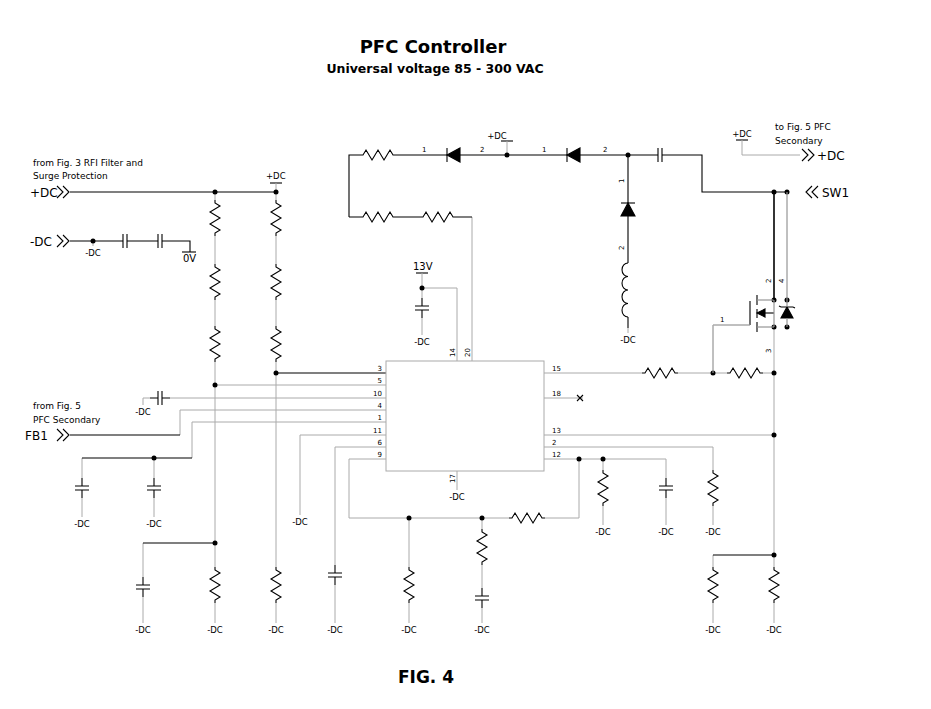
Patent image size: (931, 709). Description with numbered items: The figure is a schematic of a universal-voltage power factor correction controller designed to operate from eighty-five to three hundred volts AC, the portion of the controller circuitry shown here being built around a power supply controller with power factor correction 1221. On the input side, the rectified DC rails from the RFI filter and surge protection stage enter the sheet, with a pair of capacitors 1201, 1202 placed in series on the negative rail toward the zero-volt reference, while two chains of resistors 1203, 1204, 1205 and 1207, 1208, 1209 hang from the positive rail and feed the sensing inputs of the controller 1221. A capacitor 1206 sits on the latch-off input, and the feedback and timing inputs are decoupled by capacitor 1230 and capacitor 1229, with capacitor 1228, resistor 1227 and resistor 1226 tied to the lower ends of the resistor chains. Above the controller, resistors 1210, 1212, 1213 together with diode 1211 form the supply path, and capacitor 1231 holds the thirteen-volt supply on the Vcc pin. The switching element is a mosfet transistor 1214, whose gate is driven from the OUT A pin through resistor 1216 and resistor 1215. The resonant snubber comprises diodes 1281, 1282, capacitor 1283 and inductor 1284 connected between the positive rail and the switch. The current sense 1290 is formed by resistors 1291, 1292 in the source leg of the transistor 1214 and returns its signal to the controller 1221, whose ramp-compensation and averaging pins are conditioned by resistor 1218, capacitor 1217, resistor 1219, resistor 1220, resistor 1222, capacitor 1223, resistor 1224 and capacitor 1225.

The capacitor 1201 is at (122, 228).
The capacitor 1202 is at (157, 228).
The resistor 1203 is at (232, 218).
The resistor 1204 is at (232, 282).
The resistor 1205 is at (232, 344).
The capacitor 1206 is at (160, 384).
The resistor 1207 is at (293, 218).
The resistor 1208 is at (293, 282).
The resistor 1209 is at (293, 344).
The resistor 1210 is at (487, 223).
The diode 1211 is at (453, 144).
The resistor 1212 is at (378, 207).
The resistor 1213 is at (438, 207).
The mosfet transistor 1214 is at (769, 282).
The resistor 1215 is at (745, 385).
The resistor 1216 is at (660, 385).
The capacitor 1217 is at (681, 484).
The resistor 1218 is at (620, 488).
The resistor 1219 is at (730, 488).
The resistor 1220 is at (526, 509).
The power supply controller with power factor correction 1221 is at (465, 416).
The resistor 1222 is at (500, 547).
The capacitor 1223 is at (504, 598).
The resistor 1224 is at (426, 585).
The capacitor 1225 is at (358, 575).
The resistor 1226 is at (293, 585).
The resistor 1227 is at (232, 585).
The capacitor 1228 is at (164, 587).
The capacitor 1229 is at (175, 488).
The capacitor 1230 is at (103, 488).
The capacitor 1231 is at (408, 304).
The diode 1281 is at (570, 172).
The diode 1282 is at (608, 212).
The capacitor 1283 is at (656, 172).
The inductor 1284 is at (645, 290).
The current sense 1290 is at (713, 588).
The resistor 1291 is at (730, 585).
The resistor 1292 is at (791, 585).